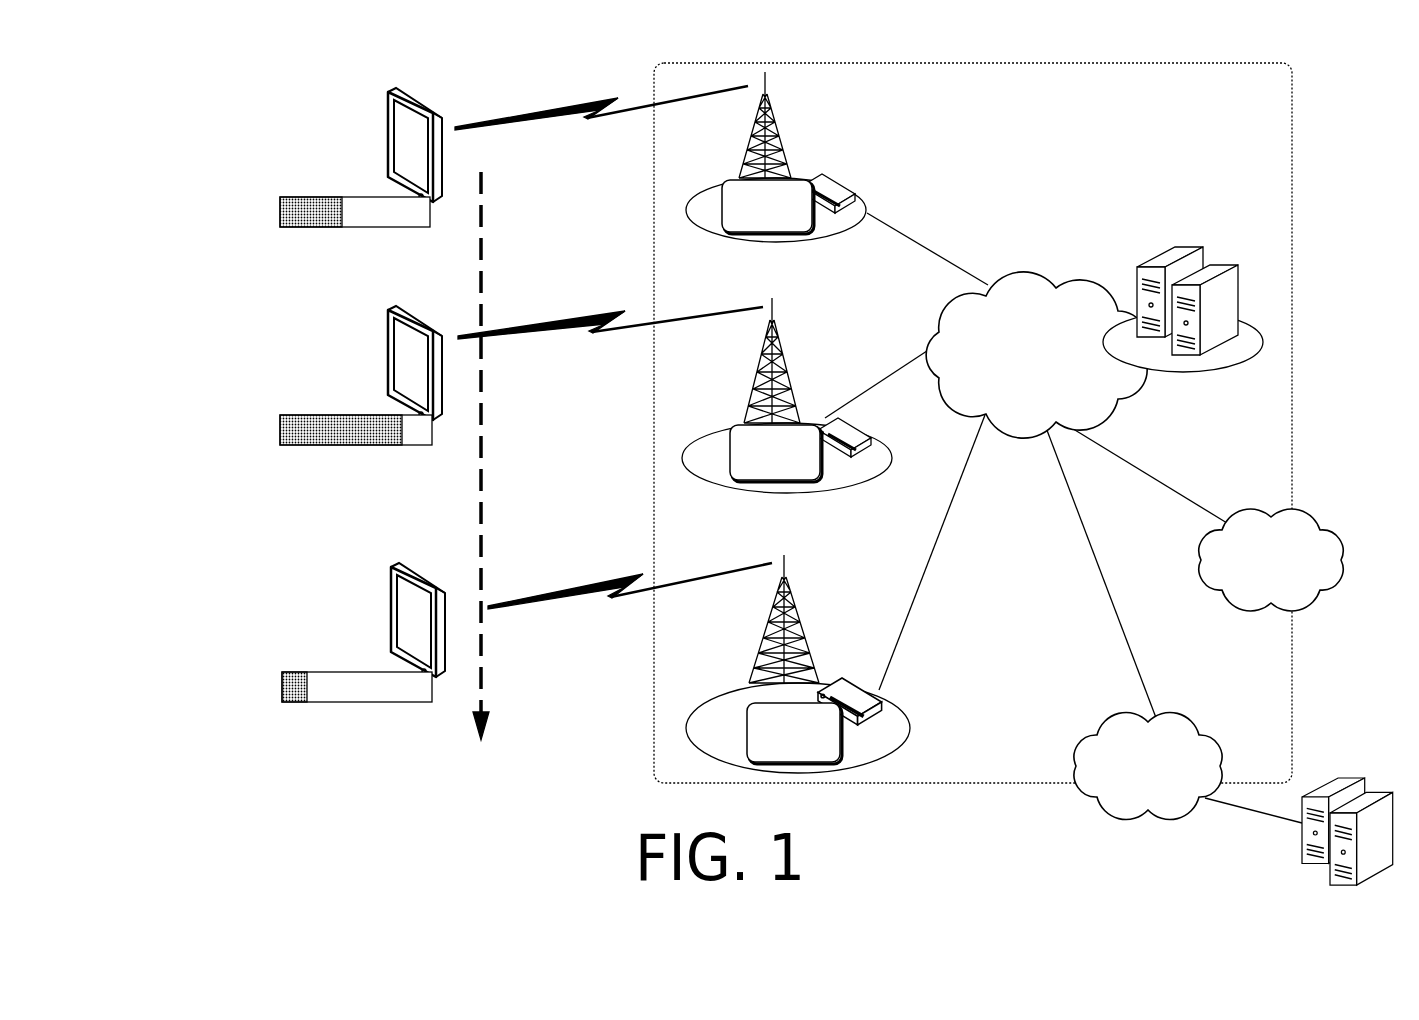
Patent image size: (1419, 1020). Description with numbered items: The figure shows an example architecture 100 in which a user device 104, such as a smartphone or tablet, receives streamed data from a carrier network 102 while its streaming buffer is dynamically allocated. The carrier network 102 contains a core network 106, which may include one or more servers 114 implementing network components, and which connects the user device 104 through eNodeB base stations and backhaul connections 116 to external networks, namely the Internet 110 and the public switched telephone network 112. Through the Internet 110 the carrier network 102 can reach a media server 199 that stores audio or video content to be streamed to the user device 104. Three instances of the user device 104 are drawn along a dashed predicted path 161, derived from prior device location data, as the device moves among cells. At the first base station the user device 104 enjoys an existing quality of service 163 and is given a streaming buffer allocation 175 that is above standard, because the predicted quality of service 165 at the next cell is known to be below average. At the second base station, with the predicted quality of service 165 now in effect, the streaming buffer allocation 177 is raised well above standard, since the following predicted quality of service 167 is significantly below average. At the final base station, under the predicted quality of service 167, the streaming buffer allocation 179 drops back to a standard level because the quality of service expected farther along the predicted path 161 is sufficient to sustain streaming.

The architecture 100 is at (203, 82).
The carrier network 102 is at (1074, 91).
The user device 104 is at (403, 89).
The core network 106 is at (1058, 391).
The Internet 110 is at (1166, 793).
The public switched telephone network 112 is at (1289, 584).
The servers 114 is at (1192, 263).
The backhaul connection 116 is at (906, 240).
The predicted path 161 is at (485, 700).
The existing quality of service 163 is at (505, 110).
The predicted quality of service 165 is at (584, 320).
The predicted quality of service 167 is at (546, 594).
The streaming buffer allocation 175 is at (290, 204).
The streaming buffer allocation 177 is at (290, 421).
The streaming buffer allocation 179 is at (289, 677).
The media server 199 is at (1302, 850).